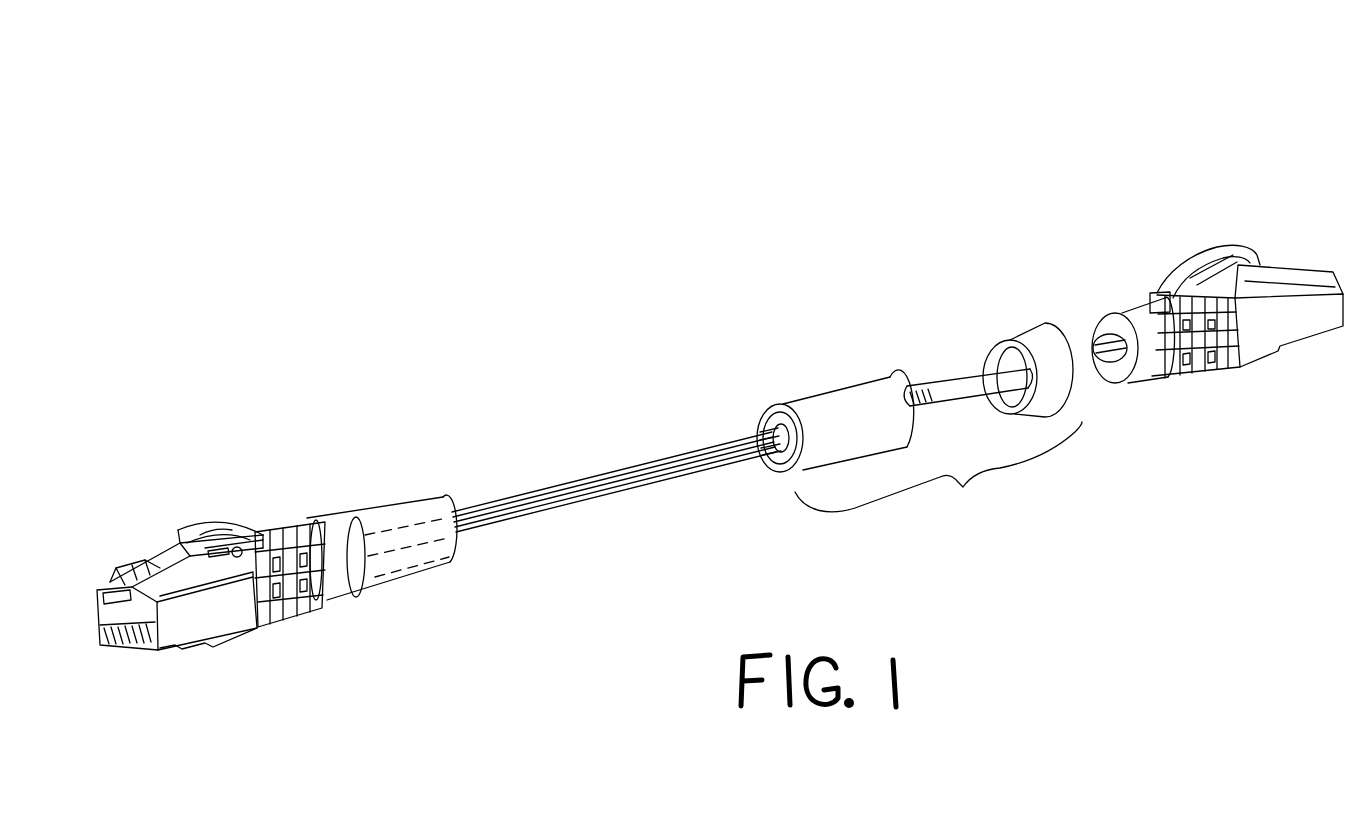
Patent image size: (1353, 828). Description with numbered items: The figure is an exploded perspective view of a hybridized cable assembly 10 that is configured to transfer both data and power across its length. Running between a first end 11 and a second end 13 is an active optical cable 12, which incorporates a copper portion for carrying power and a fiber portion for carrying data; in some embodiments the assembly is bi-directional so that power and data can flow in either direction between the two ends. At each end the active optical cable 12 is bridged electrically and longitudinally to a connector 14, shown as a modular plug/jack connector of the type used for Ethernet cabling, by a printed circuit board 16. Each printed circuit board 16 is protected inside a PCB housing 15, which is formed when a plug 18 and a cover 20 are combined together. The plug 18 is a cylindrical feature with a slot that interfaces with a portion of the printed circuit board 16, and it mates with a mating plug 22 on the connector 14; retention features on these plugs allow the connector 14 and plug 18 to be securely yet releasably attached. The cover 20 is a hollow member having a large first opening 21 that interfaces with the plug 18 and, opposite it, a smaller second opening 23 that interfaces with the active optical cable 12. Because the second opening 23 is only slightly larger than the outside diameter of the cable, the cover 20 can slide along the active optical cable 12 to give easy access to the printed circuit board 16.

The hybridized cable assembly 10 is at (537, 612).
The first end 11 is at (234, 226).
The active optical cable 12 is at (610, 468).
The second end 13 is at (948, 142).
The connector 14 is at (117, 578).
The PCB housing 15 is at (377, 601).
The printed circuit board 16 is at (395, 545).
The plug 18 is at (1022, 325).
The cover 20 is at (817, 385).
The first opening 21 is at (901, 376).
The mating plug 22 is at (1090, 320).
The second opening 23 is at (749, 426).